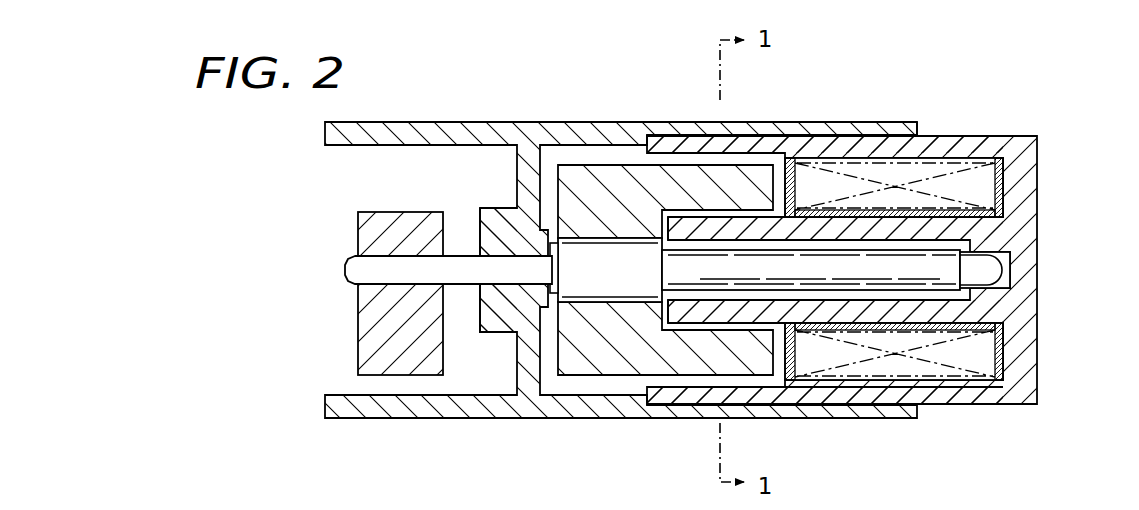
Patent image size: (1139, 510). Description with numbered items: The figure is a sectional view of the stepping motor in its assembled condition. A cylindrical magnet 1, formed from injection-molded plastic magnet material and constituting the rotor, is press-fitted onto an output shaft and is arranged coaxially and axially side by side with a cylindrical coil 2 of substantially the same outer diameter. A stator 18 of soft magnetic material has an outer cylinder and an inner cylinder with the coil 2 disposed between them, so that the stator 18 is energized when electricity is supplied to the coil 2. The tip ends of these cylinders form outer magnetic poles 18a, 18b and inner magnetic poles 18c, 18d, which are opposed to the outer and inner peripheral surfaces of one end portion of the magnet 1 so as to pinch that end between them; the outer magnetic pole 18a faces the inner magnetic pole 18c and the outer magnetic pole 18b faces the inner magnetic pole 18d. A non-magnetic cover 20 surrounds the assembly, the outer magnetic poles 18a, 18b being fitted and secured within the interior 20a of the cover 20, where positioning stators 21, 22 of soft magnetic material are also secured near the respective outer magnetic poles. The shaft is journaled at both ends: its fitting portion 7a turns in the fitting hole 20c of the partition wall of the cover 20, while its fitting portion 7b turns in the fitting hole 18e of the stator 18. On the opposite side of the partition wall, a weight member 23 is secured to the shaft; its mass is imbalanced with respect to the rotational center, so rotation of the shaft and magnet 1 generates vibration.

The cylindrical magnet 1 is at (607, 160).
The cylindrical coil 2 is at (911, 176).
The fitting portion of the output shaft 7a is at (481, 274).
The fitting portion of the output shaft 7b is at (1000, 273).
The stator 18 is at (1011, 135).
The outer magnetic pole 18a is at (674, 146).
The outer magnetic pole 18b is at (655, 398).
The inner magnetic pole 18c is at (698, 228).
The inner magnetic pole 18d is at (640, 366).
The fitting hole of the stator 18e is at (996, 258).
The cover 20 is at (540, 122).
The interior of the cover 20a is at (822, 136).
The fitting hole of the cover 20c is at (500, 249).
The positioning stator 21 is at (825, 106).
The positioning stator 22 is at (820, 427).
The weight member 23 is at (358, 339).